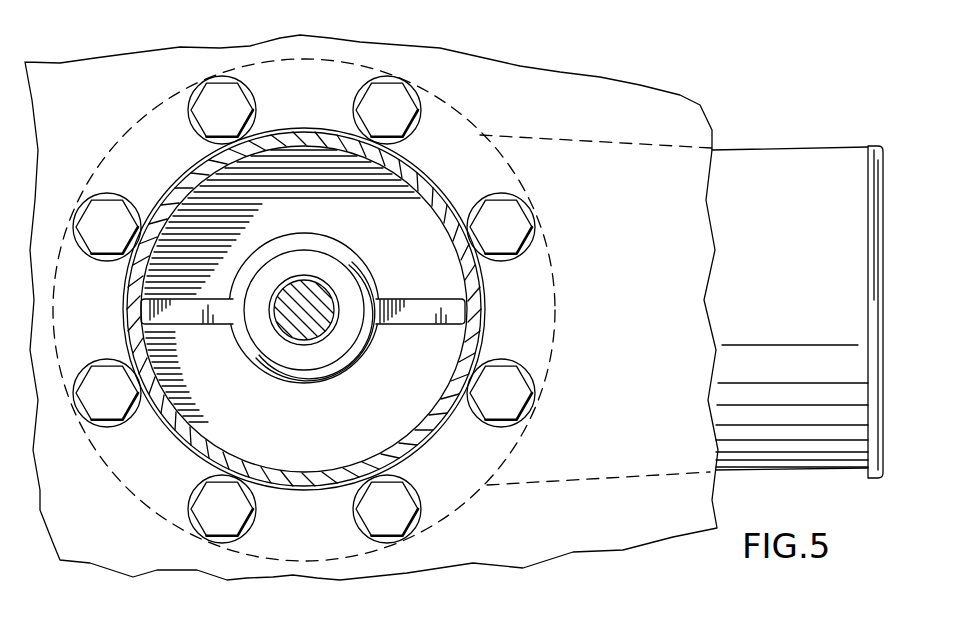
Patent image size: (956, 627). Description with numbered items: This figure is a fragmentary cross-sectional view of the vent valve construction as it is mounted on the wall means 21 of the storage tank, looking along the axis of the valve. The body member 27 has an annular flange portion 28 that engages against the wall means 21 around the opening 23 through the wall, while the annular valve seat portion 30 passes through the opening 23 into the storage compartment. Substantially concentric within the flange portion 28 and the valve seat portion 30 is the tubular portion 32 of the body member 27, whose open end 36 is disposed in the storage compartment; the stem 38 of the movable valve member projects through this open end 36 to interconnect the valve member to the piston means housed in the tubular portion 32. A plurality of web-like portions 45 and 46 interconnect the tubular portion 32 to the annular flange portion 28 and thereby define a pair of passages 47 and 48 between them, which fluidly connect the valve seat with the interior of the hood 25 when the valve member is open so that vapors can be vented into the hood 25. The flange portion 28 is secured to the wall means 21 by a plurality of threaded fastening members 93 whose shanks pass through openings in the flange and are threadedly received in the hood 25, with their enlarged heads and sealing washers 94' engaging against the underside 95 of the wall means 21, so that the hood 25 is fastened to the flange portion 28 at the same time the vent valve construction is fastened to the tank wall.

The wall means 21 is at (603, 93).
The opening 23 is at (478, 312).
The hood 25 is at (770, 157).
The body member 27 is at (420, 182).
The annular flange portion 28 is at (510, 451).
The annular valve seat portion 30 is at (470, 343).
The tubular portion 32 is at (350, 372).
The open end 36 is at (327, 268).
The stem 38 is at (290, 323).
The web-like portion 45 is at (192, 303).
The web-like portion 46 is at (415, 303).
The passage 47 is at (262, 411).
The passage 48 is at (300, 197).
The threaded fastening member 93 is at (217, 90).
The sealing washer 94' is at (343, 309).
The underside 95 is at (291, 503).